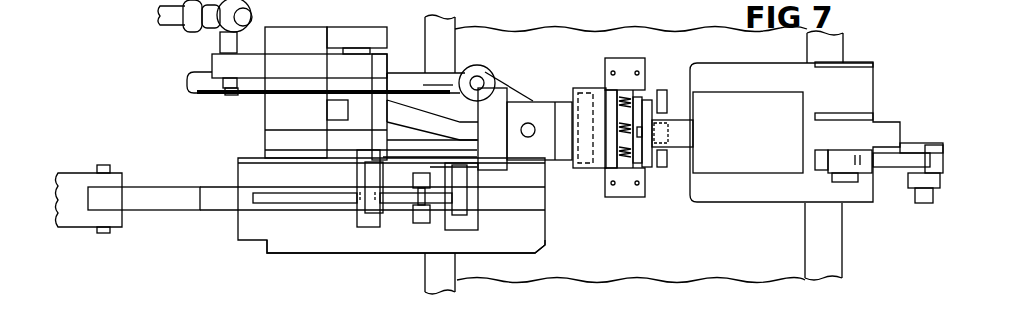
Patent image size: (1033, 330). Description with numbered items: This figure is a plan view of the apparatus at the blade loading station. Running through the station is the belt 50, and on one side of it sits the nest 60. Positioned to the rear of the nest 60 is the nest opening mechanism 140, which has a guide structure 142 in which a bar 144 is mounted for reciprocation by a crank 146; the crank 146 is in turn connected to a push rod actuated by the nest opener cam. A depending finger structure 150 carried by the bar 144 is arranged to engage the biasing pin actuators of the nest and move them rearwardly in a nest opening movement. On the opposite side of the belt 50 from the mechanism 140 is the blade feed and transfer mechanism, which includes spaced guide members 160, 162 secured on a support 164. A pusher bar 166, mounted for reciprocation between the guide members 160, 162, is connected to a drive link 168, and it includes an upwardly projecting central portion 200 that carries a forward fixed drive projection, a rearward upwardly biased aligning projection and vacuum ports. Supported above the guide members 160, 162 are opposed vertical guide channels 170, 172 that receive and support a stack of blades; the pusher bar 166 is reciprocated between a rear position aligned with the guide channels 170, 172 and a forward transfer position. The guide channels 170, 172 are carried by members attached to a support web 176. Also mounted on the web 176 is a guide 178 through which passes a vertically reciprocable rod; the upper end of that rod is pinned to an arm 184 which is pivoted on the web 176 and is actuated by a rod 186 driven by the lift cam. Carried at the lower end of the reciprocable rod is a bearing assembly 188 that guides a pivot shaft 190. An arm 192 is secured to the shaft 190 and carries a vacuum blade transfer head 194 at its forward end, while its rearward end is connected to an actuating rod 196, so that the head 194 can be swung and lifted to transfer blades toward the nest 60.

The belt 50 is at (644, 274).
The nest 60 is at (600, 73).
The nest opening mechanism 140 is at (871, 91).
The guide structure 142 is at (705, 163).
The bar 144 is at (678, 125).
The crank 146 is at (898, 160).
The depending finger structure 150 is at (650, 170).
The guide member 160 is at (245, 158).
The guide member 162 is at (253, 222).
The support 164 is at (302, 247).
The pusher bar 166 is at (205, 207).
The drive link 168 is at (70, 217).
The vertical guide channel 170 is at (373, 208).
The vertical guide channel 172 is at (460, 210).
The support web 176 is at (275, 137).
The guide 178 is at (497, 100).
The arm 184 is at (308, 67).
The rod 186 is at (165, 22).
The bearing assembly 188 is at (548, 150).
The pivot shaft 190 is at (535, 122).
The arm 192 is at (513, 92).
The vacuum blade transfer head 194 is at (590, 168).
The actuating rod 196 is at (197, 93).
The upwardly projecting central portion 200 is at (350, 198).